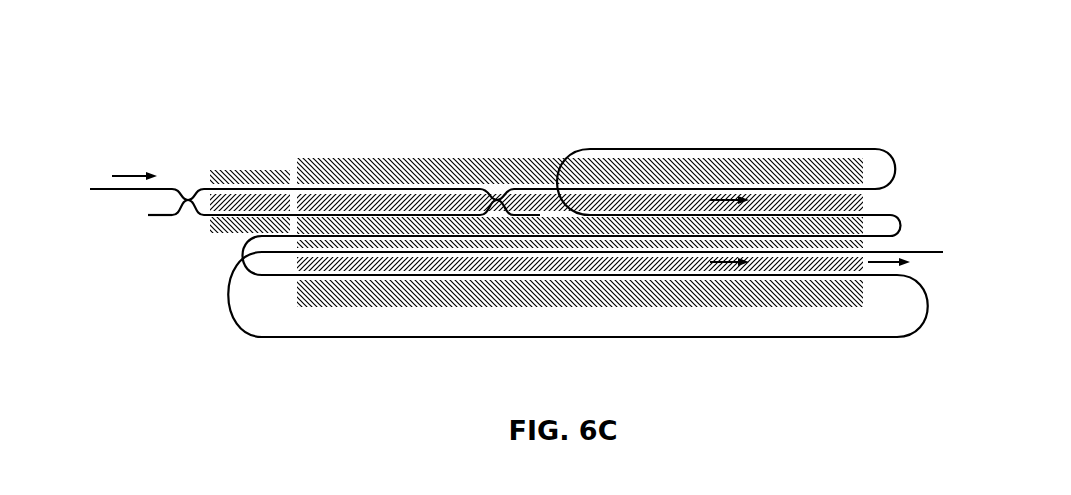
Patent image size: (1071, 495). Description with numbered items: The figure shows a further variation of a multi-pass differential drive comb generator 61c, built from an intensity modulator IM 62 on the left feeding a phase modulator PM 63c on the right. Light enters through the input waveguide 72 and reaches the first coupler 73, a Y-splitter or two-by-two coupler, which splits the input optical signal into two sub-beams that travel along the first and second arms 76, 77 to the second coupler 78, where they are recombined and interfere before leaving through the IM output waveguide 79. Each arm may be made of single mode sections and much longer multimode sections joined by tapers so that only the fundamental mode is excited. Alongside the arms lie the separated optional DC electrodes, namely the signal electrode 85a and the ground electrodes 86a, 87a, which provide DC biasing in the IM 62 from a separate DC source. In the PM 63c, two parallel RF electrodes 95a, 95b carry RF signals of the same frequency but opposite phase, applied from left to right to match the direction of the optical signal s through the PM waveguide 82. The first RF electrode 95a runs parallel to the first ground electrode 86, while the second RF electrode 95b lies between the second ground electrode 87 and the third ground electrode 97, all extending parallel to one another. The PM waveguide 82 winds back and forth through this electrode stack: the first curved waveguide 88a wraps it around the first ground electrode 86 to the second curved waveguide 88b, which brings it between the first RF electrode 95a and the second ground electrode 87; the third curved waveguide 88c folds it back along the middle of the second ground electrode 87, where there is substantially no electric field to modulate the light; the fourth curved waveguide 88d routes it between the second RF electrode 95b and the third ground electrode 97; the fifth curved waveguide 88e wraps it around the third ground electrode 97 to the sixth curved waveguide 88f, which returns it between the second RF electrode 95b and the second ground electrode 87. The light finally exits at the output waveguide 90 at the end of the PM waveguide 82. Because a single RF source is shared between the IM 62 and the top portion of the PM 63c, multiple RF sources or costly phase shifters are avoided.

The multi-pass differential drive comb generator 61c is at (892, 40).
The IM 62 is at (227, 93).
The PM 63c is at (813, 123).
The input waveguide 72 is at (100, 188).
The first coupler 73 is at (186, 198).
The signal electrode 85a is at (215, 203).
The ground electrode 86a is at (232, 172).
The ground electrode 87a is at (240, 232).
The first arm 76 is at (348, 188).
The second arm 77 is at (393, 215).
The second coupler 78 is at (495, 200).
The IM output waveguide 79 is at (522, 188).
The first ground electrode 86 is at (768, 170).
The second ground electrode 87 is at (662, 230).
The signal wave s is at (702, 200).
The third ground electrode 97 is at (400, 297).
The first RF electrode 95a is at (640, 190).
The second RF electrode 95b is at (567, 272).
The PM waveguide 82 is at (832, 188).
The first curved waveguide 88a is at (870, 150).
The second curved waveguide 88b is at (572, 148).
The third curved waveguide 88c is at (887, 215).
The fourth curved waveguide 88d is at (262, 254).
The fifth curved waveguide 88e is at (922, 327).
The sixth curved waveguide 88f is at (228, 318).
The output waveguide 90 is at (930, 252).